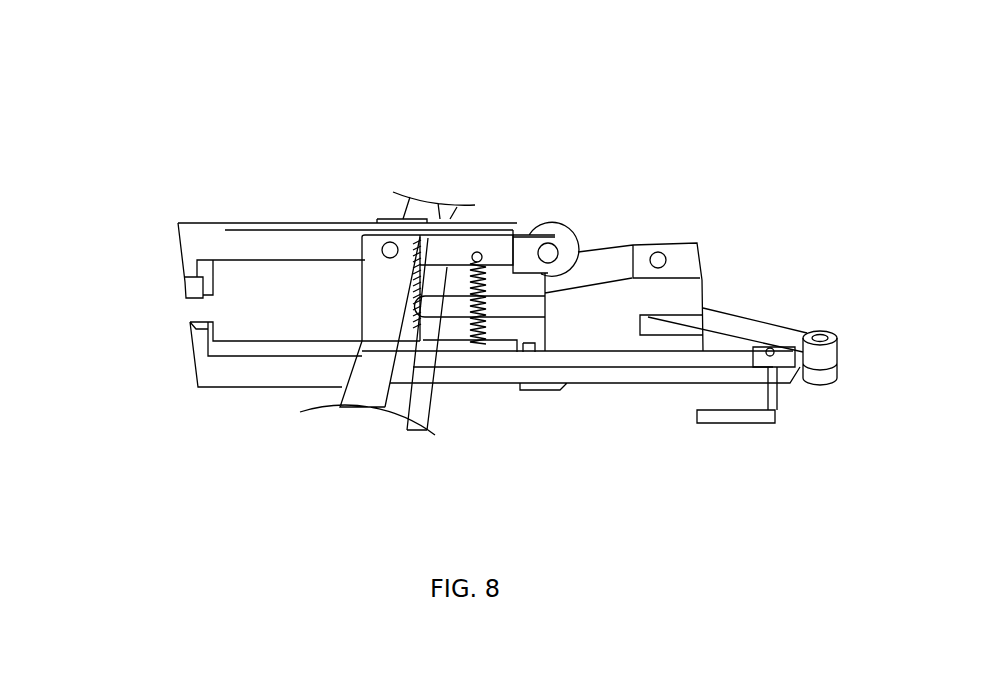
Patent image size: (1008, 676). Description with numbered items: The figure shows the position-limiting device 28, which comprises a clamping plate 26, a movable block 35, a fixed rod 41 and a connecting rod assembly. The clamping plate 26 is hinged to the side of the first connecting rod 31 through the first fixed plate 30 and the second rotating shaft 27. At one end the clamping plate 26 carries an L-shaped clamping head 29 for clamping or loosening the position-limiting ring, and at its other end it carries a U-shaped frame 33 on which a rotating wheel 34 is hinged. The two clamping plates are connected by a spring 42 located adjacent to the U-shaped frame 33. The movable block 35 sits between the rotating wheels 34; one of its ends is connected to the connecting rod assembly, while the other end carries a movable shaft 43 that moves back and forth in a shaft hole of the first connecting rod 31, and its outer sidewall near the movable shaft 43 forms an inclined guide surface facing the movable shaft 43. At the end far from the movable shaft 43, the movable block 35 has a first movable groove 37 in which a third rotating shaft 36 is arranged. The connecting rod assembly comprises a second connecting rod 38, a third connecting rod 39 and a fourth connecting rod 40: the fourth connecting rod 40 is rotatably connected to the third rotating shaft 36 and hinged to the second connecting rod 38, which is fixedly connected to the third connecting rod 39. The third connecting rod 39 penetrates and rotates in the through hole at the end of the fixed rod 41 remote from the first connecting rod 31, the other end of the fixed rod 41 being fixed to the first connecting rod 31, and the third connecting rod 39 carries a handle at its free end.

The clamping plate 26 is at (443, 242).
The second rotating shaft 27 is at (386, 243).
The position-limiting device 28 is at (523, 102).
The clamping head 29 is at (192, 280).
The first fixed plate 30 is at (392, 285).
The first connecting rod 31 is at (372, 368).
The U-shaped frame 33 is at (523, 238).
The rotating wheel 34 is at (549, 222).
The movable block 35 is at (597, 267).
The third rotating shaft 36 is at (663, 252).
The first movable groove 37 is at (662, 327).
The second connecting rod 38 is at (778, 357).
The third connecting rod 39 is at (777, 397).
The fourth connecting rod 40 is at (753, 318).
The fixed rod 41 is at (587, 360).
The spring 42 is at (487, 315).
The movable shaft 43 is at (462, 305).